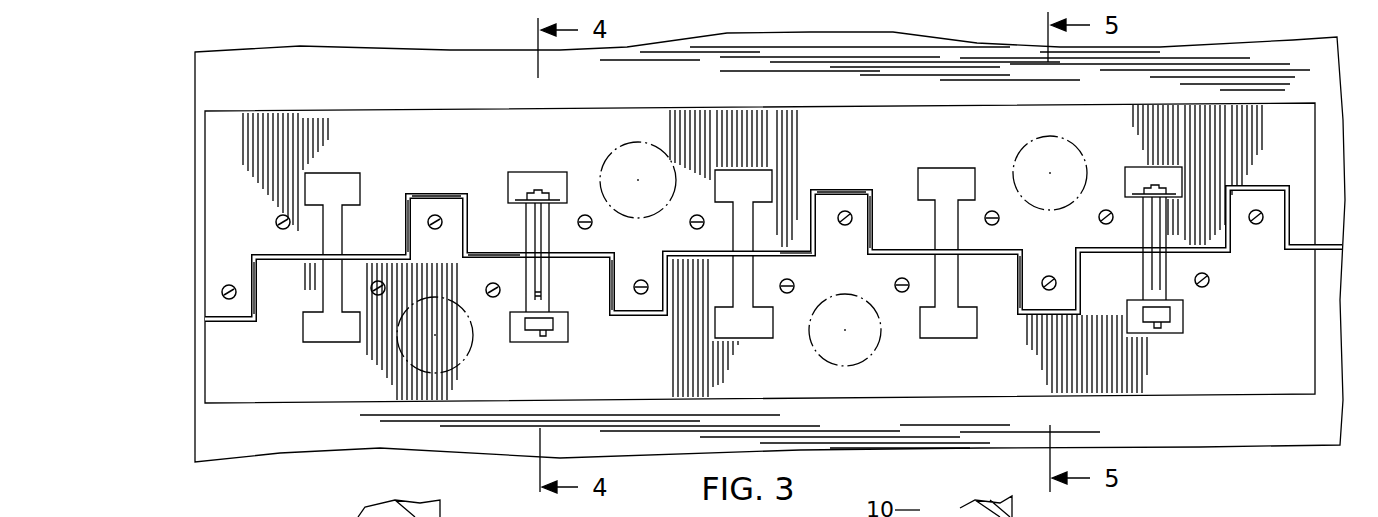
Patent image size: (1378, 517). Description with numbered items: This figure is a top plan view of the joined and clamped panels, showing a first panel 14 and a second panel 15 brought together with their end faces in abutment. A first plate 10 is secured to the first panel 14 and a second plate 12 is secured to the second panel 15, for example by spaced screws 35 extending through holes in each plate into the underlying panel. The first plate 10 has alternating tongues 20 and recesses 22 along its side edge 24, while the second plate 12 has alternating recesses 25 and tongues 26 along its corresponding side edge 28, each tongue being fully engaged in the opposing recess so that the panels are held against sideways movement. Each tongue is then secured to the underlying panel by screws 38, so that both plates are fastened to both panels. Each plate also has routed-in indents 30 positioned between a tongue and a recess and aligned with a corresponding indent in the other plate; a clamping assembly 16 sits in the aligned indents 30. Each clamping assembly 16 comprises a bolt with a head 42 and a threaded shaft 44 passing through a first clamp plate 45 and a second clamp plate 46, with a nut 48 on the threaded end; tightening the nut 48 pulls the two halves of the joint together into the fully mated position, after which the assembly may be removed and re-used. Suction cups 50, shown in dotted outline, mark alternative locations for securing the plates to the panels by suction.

The first plate 10 is at (325, 100).
The second plate 12 is at (322, 418).
The first panel 14 is at (475, 62).
The second panel 15 is at (383, 438).
The clamping assembly 16 is at (861, 249).
The tongues 20 is at (215, 309).
The recesses 22 is at (447, 193).
The side edge 24 is at (806, 258).
The recesses 25 is at (253, 272).
The tongues 26 is at (415, 210).
The side edge 28 is at (483, 257).
The indents 30 is at (948, 168).
The screws 35 is at (690, 225).
The screws 38 is at (441, 219).
The bolt head 42 is at (547, 172).
The threaded shaft 44 is at (550, 302).
The first clamp plate 45 is at (518, 172).
The second clamp plate 46 is at (514, 330).
The nut 48 is at (546, 336).
The suction cups 50 is at (1065, 142).